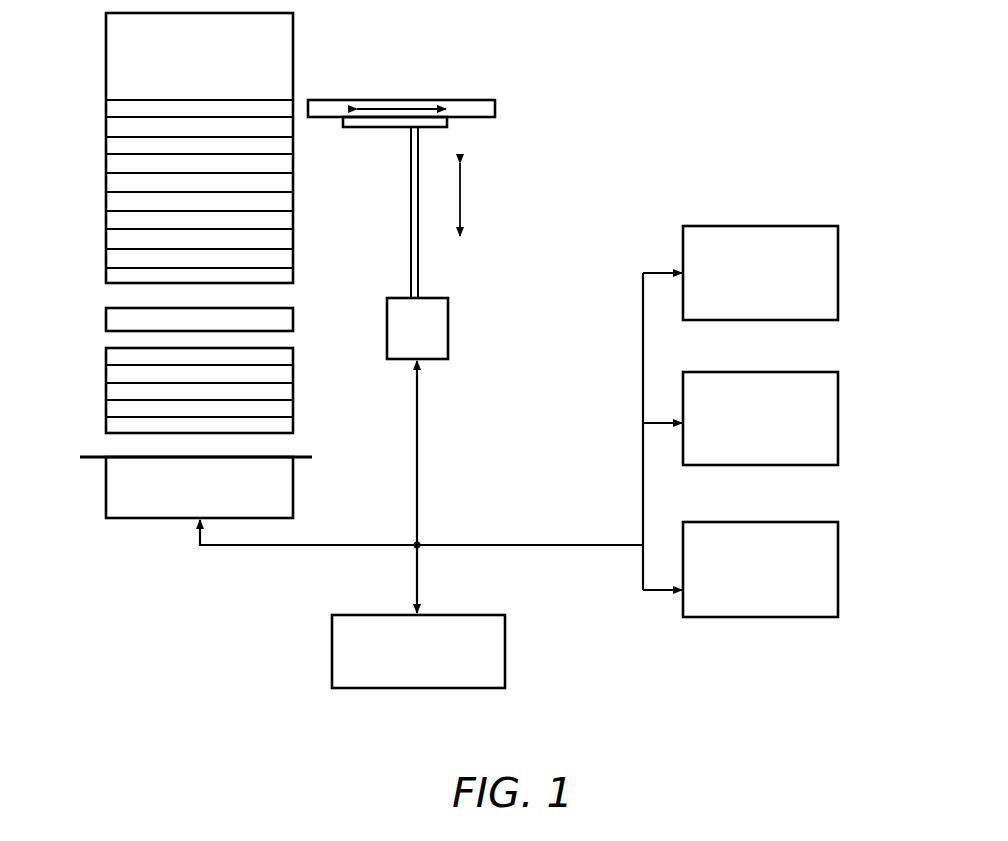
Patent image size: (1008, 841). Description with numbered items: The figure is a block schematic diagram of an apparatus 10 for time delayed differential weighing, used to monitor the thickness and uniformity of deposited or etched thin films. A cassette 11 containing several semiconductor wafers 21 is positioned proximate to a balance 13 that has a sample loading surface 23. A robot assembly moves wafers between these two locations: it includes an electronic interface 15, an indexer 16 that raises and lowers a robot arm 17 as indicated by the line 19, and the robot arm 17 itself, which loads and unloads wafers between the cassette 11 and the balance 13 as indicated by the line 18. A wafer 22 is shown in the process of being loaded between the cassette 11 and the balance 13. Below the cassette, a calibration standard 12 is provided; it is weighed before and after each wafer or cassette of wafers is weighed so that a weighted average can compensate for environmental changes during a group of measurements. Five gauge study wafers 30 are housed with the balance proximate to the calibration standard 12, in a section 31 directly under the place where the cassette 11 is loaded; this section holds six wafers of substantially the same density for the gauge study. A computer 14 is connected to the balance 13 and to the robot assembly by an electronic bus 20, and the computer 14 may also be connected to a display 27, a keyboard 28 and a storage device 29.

The apparatus 10 is at (639, 158).
The cassette 11 is at (100, 201).
The calibration standard 12 is at (106, 308).
The balance 13 is at (130, 516).
The computer 14 is at (330, 642).
The electronic interface 15 is at (435, 359).
The indexer 16 is at (408, 193).
The robot arm 17 is at (350, 128).
The robot arm motion line 18 is at (404, 108).
The indexer motion line 19 is at (462, 200).
The electronic bus 20 is at (250, 548).
The semiconductor wafers 21 is at (105, 143).
The wafer 22 is at (345, 99).
The sample loading surface 23 is at (92, 460).
The display 27 is at (802, 225).
The keyboard 28 is at (832, 371).
The storage device 29 is at (825, 521).
The gauge study wafers 30 is at (114, 393).
The section 31 is at (100, 345).